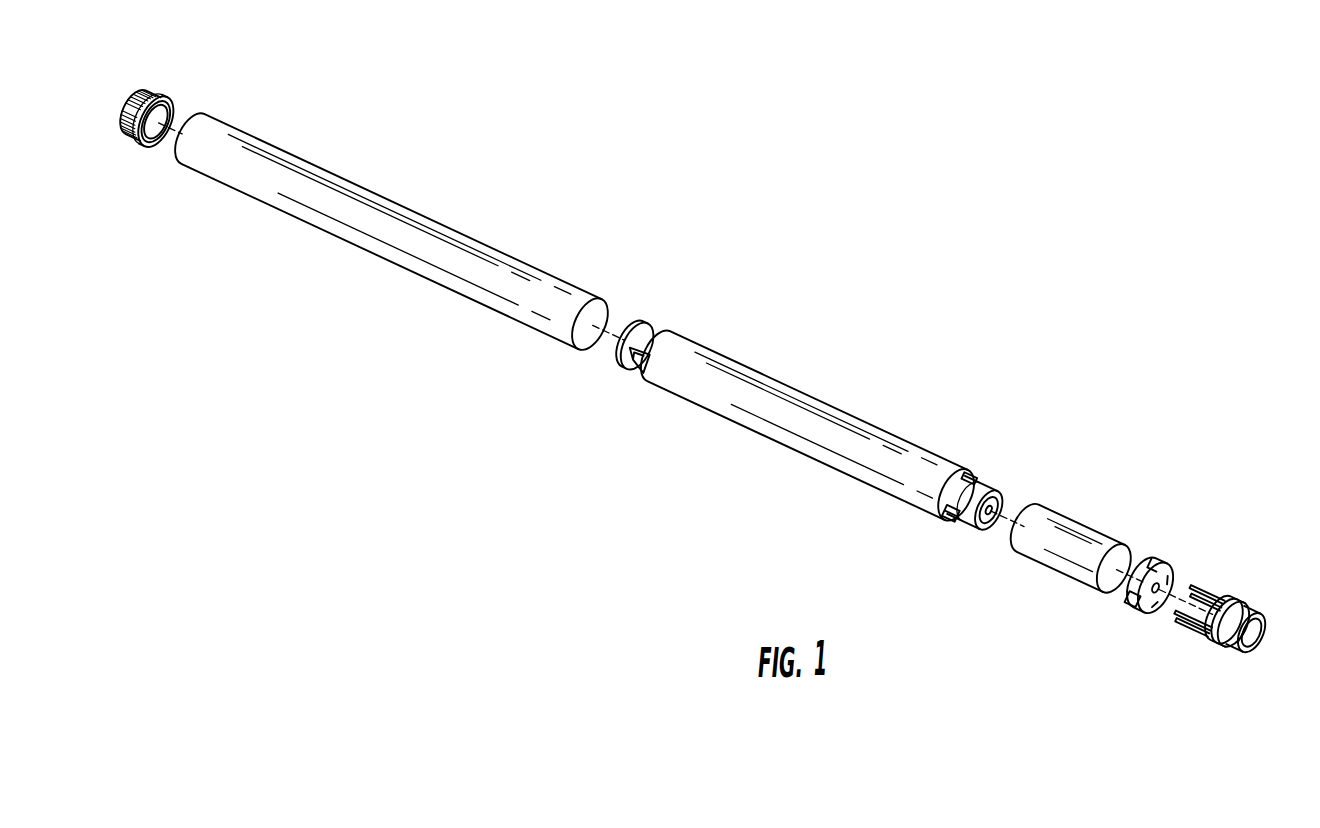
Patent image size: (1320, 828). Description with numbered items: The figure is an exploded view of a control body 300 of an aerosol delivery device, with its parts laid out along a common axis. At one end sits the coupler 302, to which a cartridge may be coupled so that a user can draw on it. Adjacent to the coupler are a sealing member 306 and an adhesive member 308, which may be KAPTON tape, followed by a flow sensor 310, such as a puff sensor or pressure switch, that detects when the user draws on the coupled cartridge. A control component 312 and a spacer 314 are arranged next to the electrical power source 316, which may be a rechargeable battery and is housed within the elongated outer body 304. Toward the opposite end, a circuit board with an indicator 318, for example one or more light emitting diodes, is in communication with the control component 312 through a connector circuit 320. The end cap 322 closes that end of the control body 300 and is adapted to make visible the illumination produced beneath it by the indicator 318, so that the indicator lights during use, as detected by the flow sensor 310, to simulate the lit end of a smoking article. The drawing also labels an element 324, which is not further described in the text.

The control body 300 is at (854, 247).
The coupler 302 is at (1262, 590).
The outer body 304 is at (446, 195).
The sealing member 306 is at (1170, 549).
The adhesive member 308 is at (1082, 514).
The flow sensor 310 is at (991, 514).
The control component 312 is at (1003, 473).
The spacer 314 is at (948, 531).
The electrical power source 316 is at (855, 396).
The circuit board with an indicator 318 is at (646, 322).
The connector circuit 320 is at (630, 374).
The end cap 322 is at (170, 81).
The contact pins 324 is at (1188, 622).